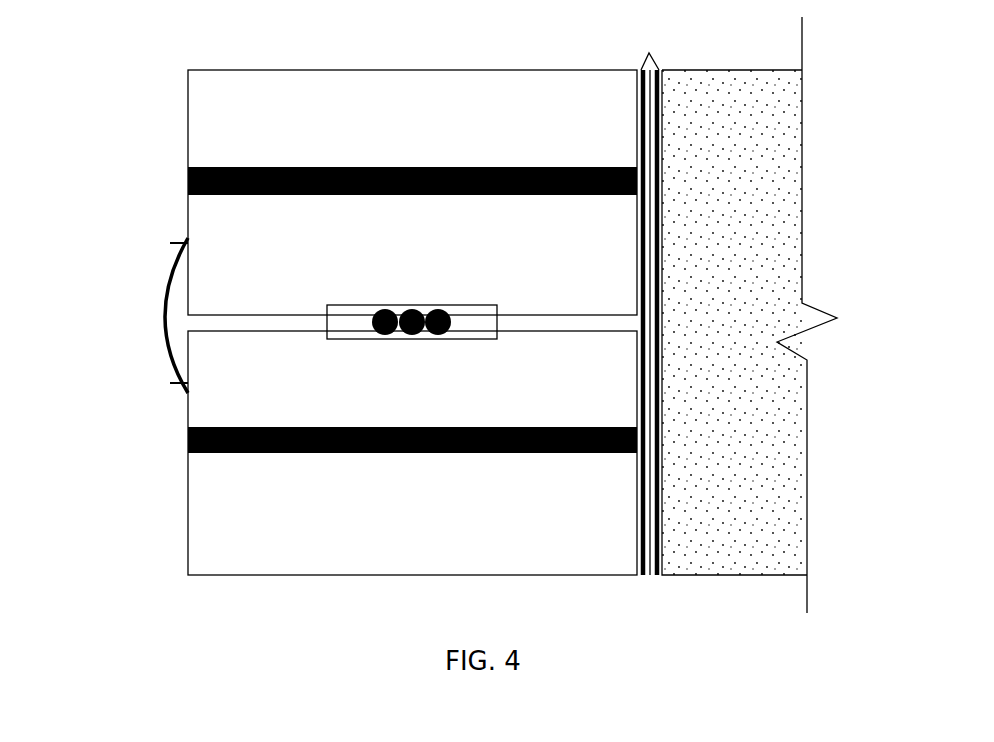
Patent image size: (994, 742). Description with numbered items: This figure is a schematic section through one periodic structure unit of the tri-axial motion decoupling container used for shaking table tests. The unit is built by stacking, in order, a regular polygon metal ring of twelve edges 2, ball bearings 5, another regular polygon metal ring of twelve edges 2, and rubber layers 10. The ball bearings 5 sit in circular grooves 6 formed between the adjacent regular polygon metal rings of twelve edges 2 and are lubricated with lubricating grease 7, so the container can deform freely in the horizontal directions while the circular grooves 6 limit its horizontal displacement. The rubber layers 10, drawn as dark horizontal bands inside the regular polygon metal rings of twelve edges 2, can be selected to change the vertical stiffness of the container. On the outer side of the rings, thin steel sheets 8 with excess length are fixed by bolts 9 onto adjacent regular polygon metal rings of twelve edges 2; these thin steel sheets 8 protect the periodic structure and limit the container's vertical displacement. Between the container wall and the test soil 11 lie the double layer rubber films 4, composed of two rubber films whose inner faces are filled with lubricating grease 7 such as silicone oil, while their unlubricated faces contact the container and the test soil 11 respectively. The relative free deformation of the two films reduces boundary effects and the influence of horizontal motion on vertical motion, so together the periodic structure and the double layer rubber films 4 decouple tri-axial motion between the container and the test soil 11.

The regular polygon metal ring of twelve edges 2 is at (213, 523).
The double layer rubber films 4 is at (649, 53).
The ball bearings 5 is at (383, 339).
The circular grooves 6 is at (350, 334).
The lubricating grease 7 is at (482, 335).
The thin steel sheets 8 is at (166, 320).
The bolts 9 is at (172, 381).
The rubber layers 10 is at (188, 182).
The test soil 11 is at (773, 188).